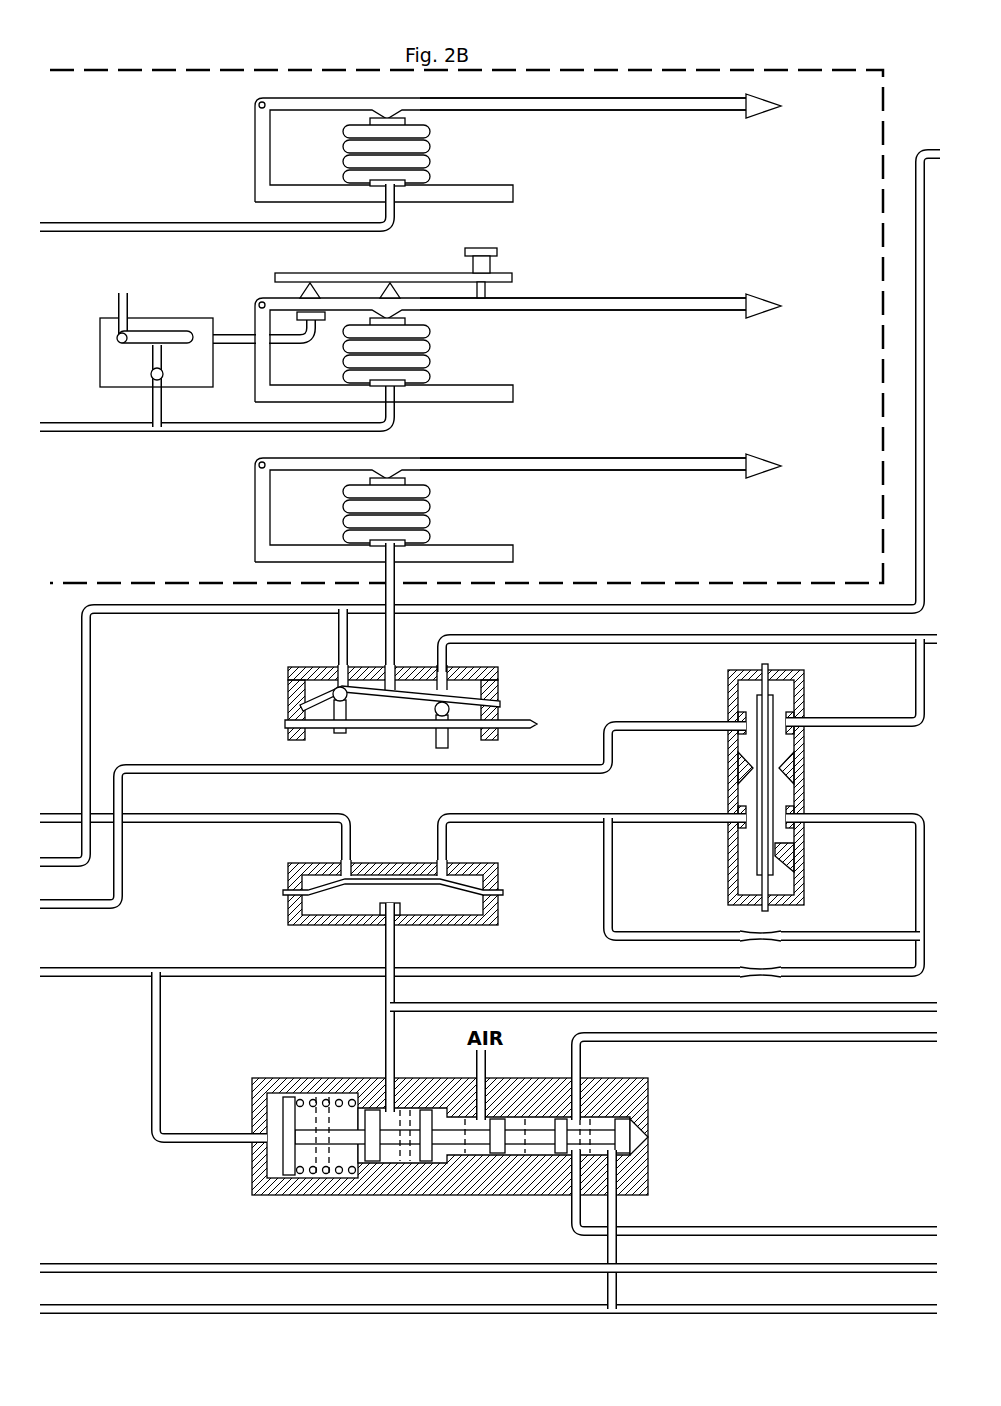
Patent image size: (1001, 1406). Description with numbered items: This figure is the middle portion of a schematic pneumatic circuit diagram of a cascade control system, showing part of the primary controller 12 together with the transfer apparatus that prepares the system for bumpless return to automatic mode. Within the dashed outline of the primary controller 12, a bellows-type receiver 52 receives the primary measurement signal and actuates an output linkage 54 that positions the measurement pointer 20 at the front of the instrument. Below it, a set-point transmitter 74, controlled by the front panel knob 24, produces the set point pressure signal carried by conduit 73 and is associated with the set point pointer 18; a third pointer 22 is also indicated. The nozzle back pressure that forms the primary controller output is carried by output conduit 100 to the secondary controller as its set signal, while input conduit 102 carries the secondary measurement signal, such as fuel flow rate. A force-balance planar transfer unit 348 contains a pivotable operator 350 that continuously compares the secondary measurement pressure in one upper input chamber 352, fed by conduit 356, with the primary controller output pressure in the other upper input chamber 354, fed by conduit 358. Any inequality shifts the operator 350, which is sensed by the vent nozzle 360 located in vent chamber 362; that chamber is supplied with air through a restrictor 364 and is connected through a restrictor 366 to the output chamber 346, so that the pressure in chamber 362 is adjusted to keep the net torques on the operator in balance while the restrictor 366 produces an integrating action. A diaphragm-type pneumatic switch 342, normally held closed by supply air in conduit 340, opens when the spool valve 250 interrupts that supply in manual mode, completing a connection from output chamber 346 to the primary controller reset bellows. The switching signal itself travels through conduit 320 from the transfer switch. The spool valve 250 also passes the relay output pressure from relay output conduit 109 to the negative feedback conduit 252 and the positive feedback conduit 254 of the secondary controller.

The primary controller 12 is at (839, 69).
The bellows-type receiver 52 is at (423, 160).
The output linkage 54 is at (575, 109).
The pointer 20 is at (777, 106).
The set-point transmitter 74 is at (453, 313).
The knob 24 is at (500, 262).
The pointer 18 is at (777, 310).
The pointer 22 is at (777, 470).
The conduit 73 is at (70, 432).
The output conduit 100 is at (914, 164).
The force-balance planar transfer unit 348 is at (749, 779).
The upper input chamber 354 is at (744, 708).
The upper input chamber 352 is at (790, 708).
The output chamber 346 is at (745, 783).
The vent chamber 362 is at (786, 797).
The pivotable operator 350 is at (757, 835).
The vent nozzle 360 is at (785, 858).
The conduit 356 is at (848, 729).
The conduit 358 is at (667, 731).
The restrictor 364 is at (755, 968).
The restrictor 366 is at (755, 932).
The conduit 320 is at (62, 981).
The diaphragm-type pneumatic switch 342 is at (282, 883).
The conduit 340 is at (385, 1036).
The spool valve 250 is at (303, 1073).
The relay output conduit 109 is at (878, 1044).
The negative feedback conduit 252 is at (880, 1229).
The input conduit 102 is at (880, 1262).
The positive feedback conduit 254 is at (896, 1314).